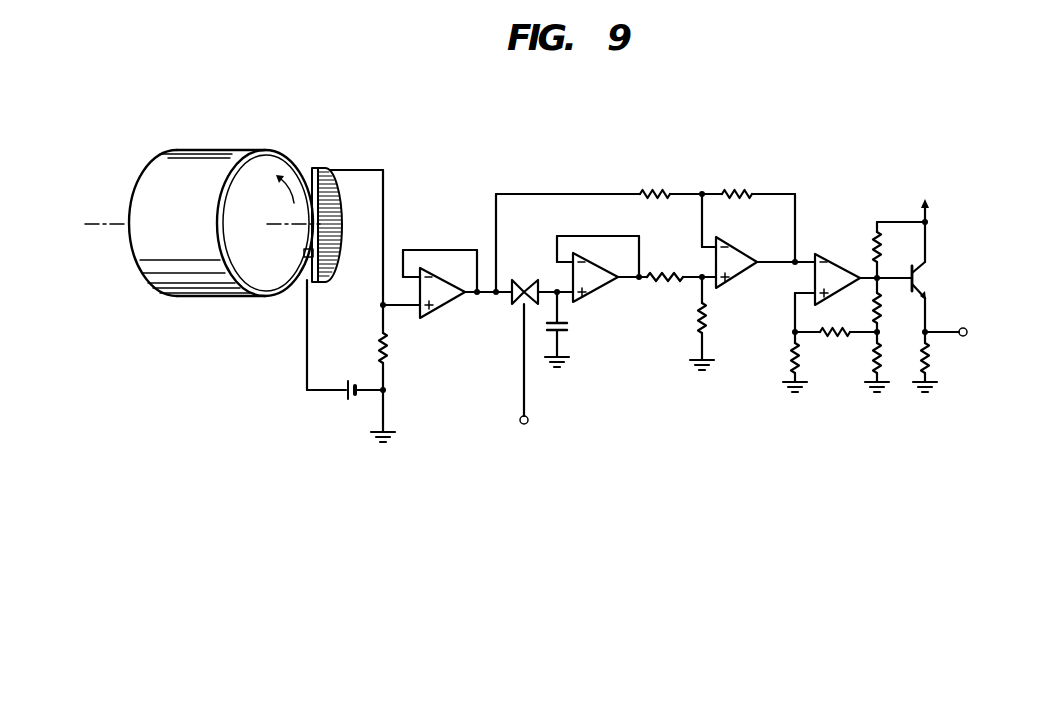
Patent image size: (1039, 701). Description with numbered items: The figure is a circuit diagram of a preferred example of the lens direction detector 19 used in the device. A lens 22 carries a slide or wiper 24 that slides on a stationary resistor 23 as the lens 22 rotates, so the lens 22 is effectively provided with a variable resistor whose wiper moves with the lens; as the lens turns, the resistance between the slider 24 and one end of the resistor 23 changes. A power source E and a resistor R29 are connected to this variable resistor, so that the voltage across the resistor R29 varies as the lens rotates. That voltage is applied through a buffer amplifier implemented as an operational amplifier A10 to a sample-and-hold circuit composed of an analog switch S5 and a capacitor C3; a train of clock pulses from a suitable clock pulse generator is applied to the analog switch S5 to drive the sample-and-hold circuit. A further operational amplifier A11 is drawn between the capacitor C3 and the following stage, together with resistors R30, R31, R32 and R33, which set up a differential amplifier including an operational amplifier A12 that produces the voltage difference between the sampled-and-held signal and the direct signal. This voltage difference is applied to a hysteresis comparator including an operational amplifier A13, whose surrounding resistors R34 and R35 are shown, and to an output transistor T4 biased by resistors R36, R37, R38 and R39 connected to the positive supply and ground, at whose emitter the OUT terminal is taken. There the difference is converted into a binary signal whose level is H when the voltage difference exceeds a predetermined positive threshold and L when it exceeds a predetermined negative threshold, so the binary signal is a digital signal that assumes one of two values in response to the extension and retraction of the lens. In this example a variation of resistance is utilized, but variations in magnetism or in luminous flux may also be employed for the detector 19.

The lens 22 is at (200, 162).
The stationary resistor 23 is at (322, 167).
The slide or wiper 24 is at (338, 244).
The detector 19 is at (713, 448).
The power source E is at (364, 401).
The resistor R29 is at (402, 373).
The resistor R30 is at (658, 182).
The resistor R31 is at (667, 267).
The resistor R32 is at (740, 182).
The resistor R33 is at (716, 323).
The resistor R34 is at (809, 367).
The resistor R35 is at (834, 344).
The resistor R36 is at (895, 250).
The resistor R37 is at (895, 305).
The resistor R38 is at (891, 362).
The resistor R39 is at (939, 362).
The operational amplifier A10 is at (446, 292).
The amplifier A11 is at (599, 277).
The operational amplifier A12 is at (741, 260).
The operational amplifier A13 is at (837, 275).
The analog switch S5 is at (525, 281).
The capacitor C3 is at (568, 329).
The transistor T4 is at (932, 277).